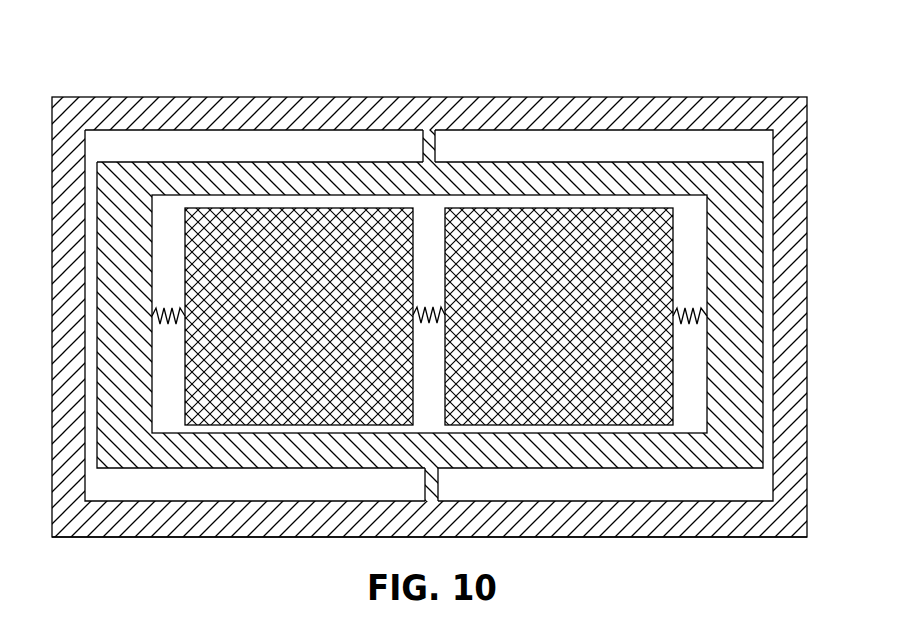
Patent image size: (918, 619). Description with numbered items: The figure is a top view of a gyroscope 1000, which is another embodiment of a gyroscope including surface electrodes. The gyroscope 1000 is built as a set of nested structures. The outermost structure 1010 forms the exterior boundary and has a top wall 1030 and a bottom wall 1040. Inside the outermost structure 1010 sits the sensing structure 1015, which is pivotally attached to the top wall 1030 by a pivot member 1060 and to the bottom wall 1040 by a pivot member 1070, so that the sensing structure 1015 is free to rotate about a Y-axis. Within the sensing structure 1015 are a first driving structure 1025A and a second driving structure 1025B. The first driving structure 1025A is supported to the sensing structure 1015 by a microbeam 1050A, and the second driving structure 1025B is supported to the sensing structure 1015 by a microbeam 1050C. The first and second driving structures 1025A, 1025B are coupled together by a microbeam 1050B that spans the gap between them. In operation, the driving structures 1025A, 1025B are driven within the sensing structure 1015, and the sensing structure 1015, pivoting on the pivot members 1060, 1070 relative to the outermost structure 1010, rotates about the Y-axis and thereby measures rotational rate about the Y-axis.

The gyroscope 1000 is at (135, 77).
The outermost structure 1010 is at (358, 78).
The sensing structure 1015 is at (363, 189).
The first driving structure 1025A is at (257, 236).
The second driving structure 1025B is at (662, 234).
The top wall 1030 is at (521, 103).
The bottom wall 1040 is at (507, 532).
The microbeam 1050A is at (187, 312).
The microbeam 1050B is at (445, 313).
The microbeam 1050C is at (677, 320).
The pivot member 1060 is at (432, 143).
The pivot member 1070 is at (433, 493).